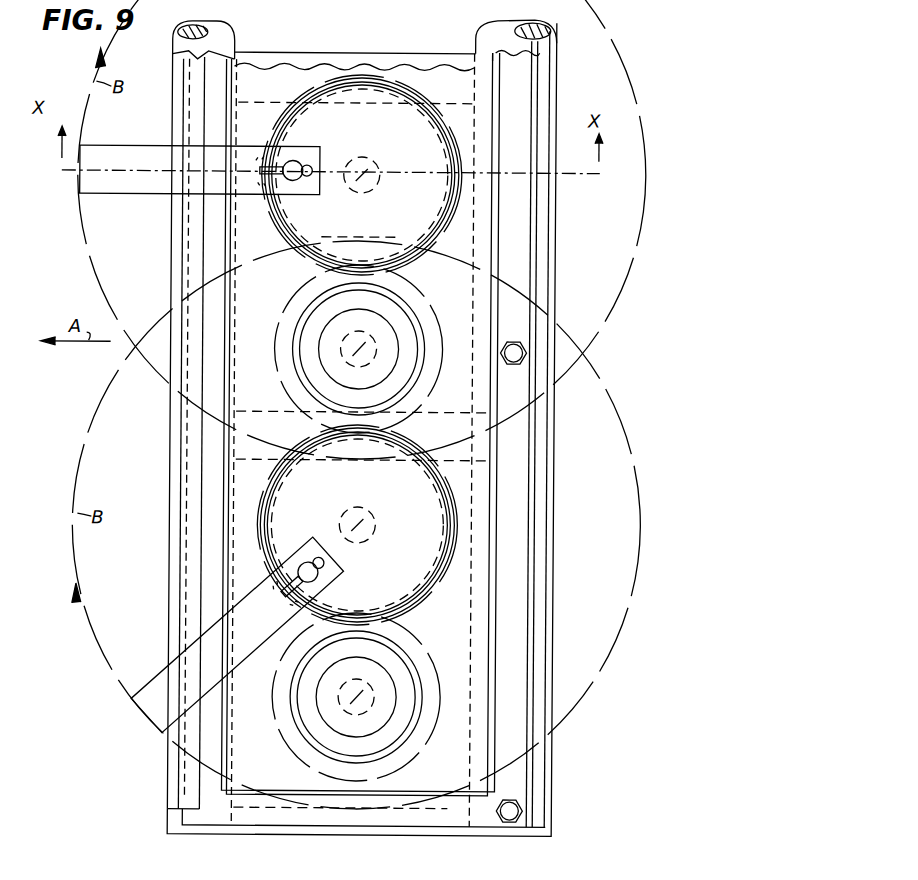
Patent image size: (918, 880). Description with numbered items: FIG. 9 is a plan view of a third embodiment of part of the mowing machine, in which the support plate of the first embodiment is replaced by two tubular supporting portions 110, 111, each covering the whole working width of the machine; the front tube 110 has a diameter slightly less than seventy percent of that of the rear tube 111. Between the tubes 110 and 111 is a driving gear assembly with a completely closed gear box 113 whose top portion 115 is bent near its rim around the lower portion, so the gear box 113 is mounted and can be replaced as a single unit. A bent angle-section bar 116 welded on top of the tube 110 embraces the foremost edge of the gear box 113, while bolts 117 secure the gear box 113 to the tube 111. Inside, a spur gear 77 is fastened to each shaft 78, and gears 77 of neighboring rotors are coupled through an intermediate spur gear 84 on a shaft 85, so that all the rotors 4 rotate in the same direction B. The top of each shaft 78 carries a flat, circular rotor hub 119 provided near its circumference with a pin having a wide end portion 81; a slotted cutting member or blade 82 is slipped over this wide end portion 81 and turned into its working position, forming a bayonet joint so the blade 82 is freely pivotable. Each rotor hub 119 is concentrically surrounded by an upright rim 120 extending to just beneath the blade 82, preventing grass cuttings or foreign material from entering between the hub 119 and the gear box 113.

The rotor 4 is at (88, 259).
The spur gear 77 is at (308, 210).
The shaft 78 is at (365, 164).
The wide end portion 81 is at (304, 158).
The cutting member or blade 82 is at (136, 152).
The intermediate spur gear 84 is at (284, 348).
The shaft 85 is at (371, 336).
The tubular supporting portion 110 is at (228, 45).
The tubular supporting portion 111 is at (476, 37).
The gear box 113 is at (514, 600).
The top portion 115 is at (242, 470).
The angle-section bar 116 is at (198, 565).
The bolts 117 is at (527, 352).
The rotor hub 119 is at (426, 219).
The upright rim 120 is at (332, 244).